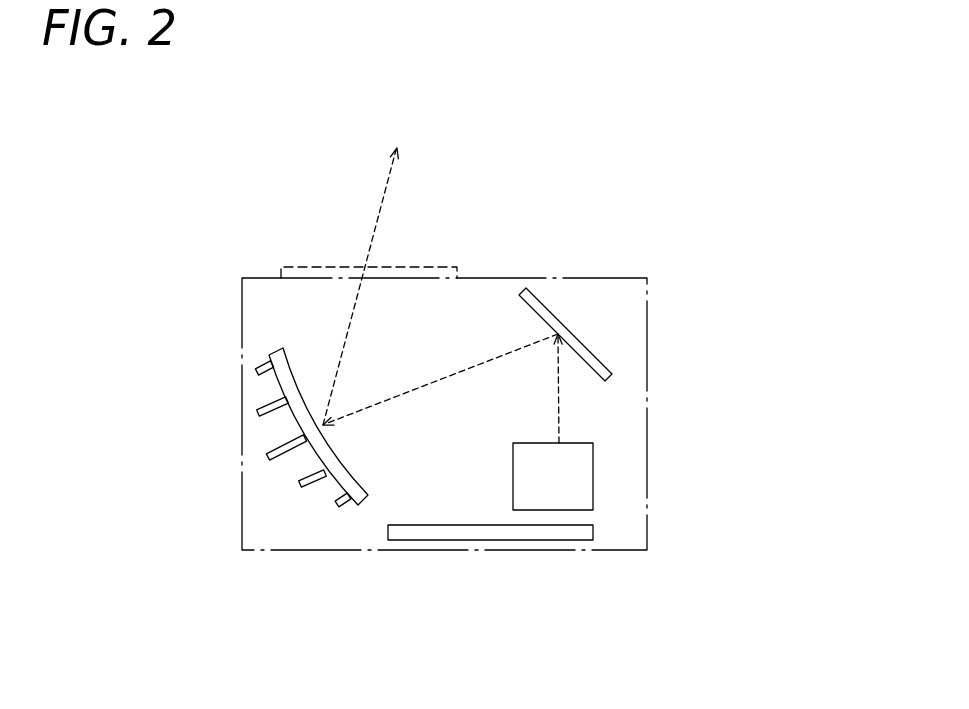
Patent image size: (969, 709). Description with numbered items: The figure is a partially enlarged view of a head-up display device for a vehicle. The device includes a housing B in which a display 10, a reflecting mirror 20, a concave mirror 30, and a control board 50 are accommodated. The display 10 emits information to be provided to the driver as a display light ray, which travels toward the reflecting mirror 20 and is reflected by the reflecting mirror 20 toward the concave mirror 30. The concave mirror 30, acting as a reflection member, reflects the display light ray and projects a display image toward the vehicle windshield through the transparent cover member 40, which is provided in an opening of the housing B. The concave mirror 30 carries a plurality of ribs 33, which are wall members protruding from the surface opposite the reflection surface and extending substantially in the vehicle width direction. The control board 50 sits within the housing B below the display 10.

The display 10 is at (593, 478).
The reflecting mirror 20 is at (590, 352).
The concave mirror 30 is at (358, 504).
The ribs 33 is at (336, 503).
The cover member 40 is at (287, 267).
The control board 50 is at (550, 540).
The housing B is at (640, 271).